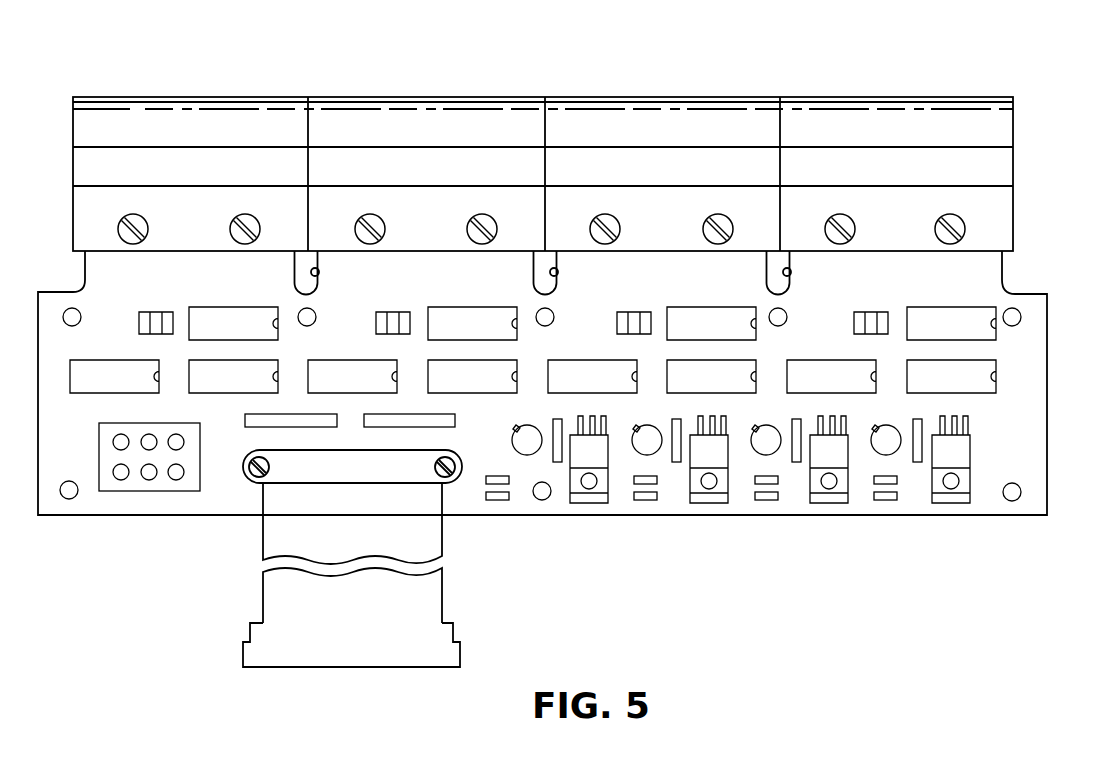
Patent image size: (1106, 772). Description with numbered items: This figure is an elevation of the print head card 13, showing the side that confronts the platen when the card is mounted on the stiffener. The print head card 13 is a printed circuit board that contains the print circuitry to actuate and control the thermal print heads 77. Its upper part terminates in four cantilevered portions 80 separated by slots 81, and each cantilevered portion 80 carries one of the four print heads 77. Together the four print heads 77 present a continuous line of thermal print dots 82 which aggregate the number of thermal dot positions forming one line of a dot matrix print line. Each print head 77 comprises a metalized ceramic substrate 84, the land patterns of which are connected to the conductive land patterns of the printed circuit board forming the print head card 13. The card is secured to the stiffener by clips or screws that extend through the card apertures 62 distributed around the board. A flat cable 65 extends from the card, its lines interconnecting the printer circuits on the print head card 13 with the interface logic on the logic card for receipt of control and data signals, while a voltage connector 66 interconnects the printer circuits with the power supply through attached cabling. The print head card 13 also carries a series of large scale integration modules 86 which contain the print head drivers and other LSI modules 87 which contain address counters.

The print head card 13 is at (1047, 384).
The card apertures 62 is at (81, 317).
The flat cable 65 is at (370, 538).
The voltage connector 66 is at (148, 491).
The print heads 77 is at (332, 97).
The cantilevered portion 80 is at (177, 289).
The slots 81 is at (319, 272).
The thermal print dots 82 is at (515, 109).
The metalized ceramic substrate 84 is at (1013, 118).
The LSI modules 86 is at (189, 387).
The LSI modules 87 is at (228, 307).